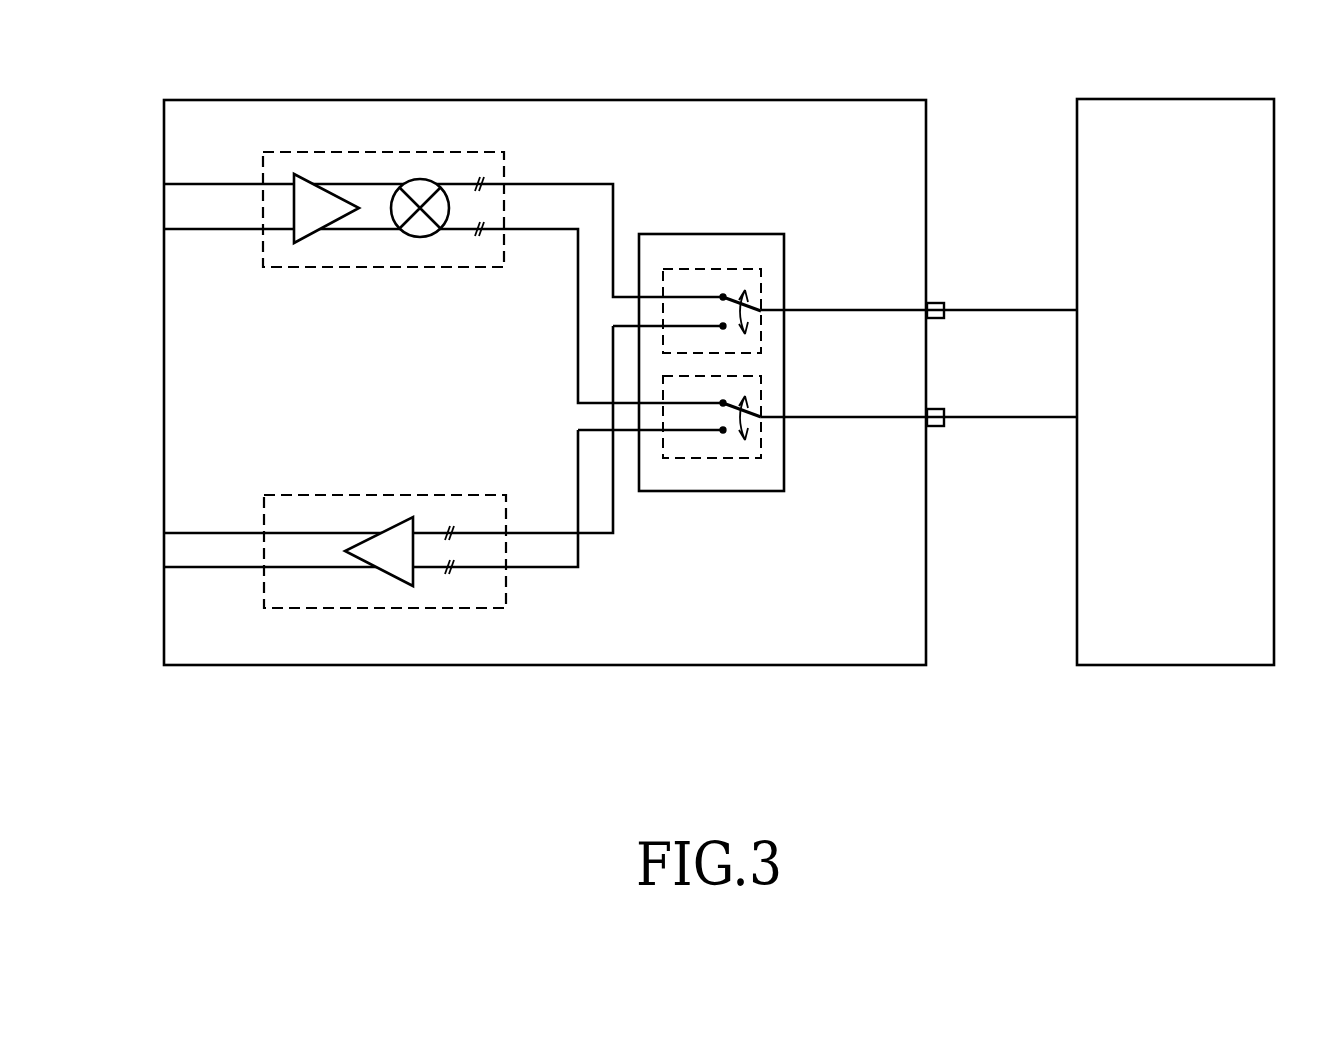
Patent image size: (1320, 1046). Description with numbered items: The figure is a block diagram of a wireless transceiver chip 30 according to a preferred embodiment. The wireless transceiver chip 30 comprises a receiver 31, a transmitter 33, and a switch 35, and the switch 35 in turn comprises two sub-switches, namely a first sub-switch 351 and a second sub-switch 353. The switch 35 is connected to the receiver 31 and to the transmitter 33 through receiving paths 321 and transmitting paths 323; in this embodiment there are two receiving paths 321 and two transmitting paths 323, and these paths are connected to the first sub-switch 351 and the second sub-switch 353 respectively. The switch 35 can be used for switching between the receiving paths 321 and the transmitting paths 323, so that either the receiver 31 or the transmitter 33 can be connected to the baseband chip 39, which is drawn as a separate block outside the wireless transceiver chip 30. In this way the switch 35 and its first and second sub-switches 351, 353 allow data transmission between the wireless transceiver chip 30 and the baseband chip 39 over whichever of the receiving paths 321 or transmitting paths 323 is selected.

The wireless transceiver chip 30 is at (853, 105).
The receiver 31 is at (370, 260).
The transmitter 33 is at (383, 497).
The switch 35 is at (722, 235).
The first sub-switch 351 is at (762, 292).
The second sub-switch 353 is at (762, 400).
The receiving paths 321 is at (645, 185).
The transmitting paths 323 is at (617, 561).
The baseband chip 39 is at (1185, 393).